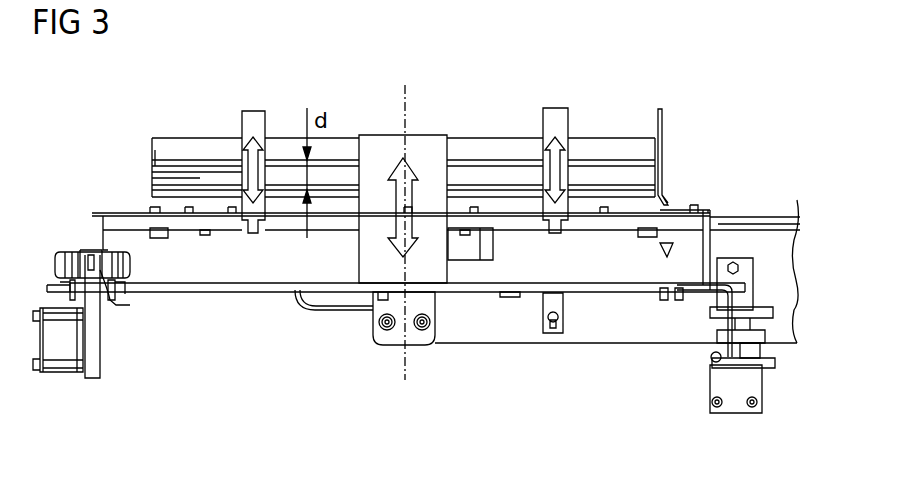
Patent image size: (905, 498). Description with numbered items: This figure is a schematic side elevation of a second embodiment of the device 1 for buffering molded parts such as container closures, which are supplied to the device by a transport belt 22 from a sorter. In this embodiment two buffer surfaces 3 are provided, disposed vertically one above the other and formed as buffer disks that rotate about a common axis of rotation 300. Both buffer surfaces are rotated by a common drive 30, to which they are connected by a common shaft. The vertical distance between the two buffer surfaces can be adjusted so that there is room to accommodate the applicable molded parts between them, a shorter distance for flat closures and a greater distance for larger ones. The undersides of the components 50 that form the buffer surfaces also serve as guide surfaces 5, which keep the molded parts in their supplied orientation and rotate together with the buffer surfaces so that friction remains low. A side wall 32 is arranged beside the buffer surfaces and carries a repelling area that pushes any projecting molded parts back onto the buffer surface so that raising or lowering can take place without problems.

The device for buffering 1 is at (663, 97).
The buffer surface 3 is at (178, 162).
The guide surface 5 is at (190, 177).
The component 50 is at (223, 163).
The axis of rotation 300 is at (405, 90).
The drive 30 is at (390, 340).
The side wall 32 is at (662, 145).
The transport belt 22 is at (768, 218).